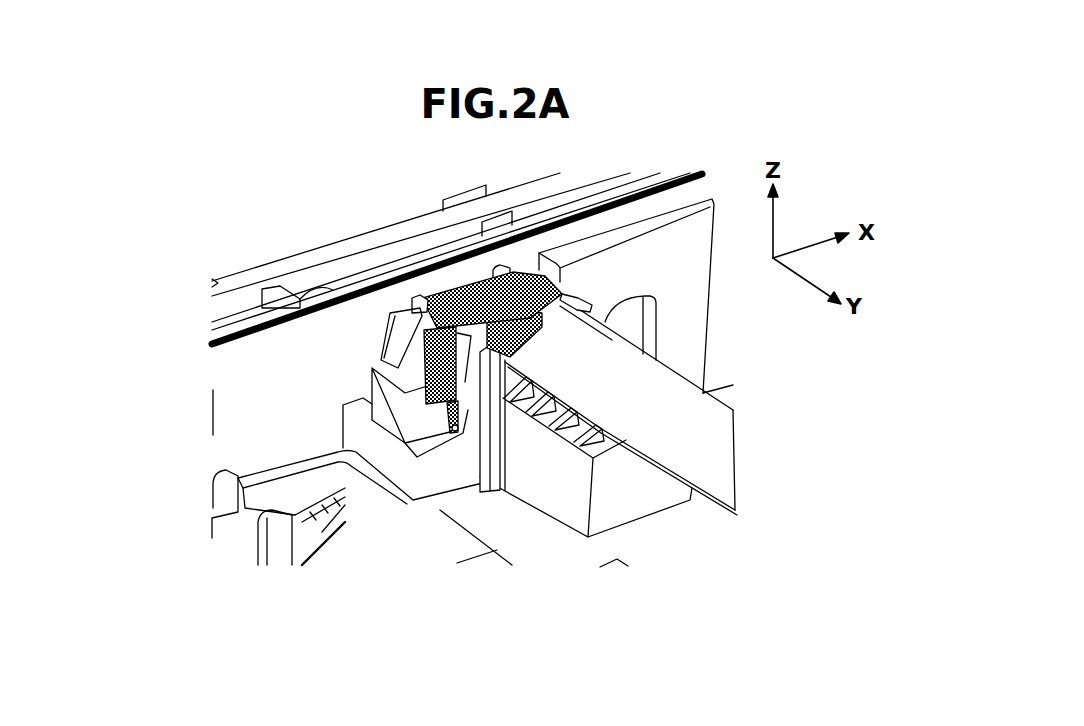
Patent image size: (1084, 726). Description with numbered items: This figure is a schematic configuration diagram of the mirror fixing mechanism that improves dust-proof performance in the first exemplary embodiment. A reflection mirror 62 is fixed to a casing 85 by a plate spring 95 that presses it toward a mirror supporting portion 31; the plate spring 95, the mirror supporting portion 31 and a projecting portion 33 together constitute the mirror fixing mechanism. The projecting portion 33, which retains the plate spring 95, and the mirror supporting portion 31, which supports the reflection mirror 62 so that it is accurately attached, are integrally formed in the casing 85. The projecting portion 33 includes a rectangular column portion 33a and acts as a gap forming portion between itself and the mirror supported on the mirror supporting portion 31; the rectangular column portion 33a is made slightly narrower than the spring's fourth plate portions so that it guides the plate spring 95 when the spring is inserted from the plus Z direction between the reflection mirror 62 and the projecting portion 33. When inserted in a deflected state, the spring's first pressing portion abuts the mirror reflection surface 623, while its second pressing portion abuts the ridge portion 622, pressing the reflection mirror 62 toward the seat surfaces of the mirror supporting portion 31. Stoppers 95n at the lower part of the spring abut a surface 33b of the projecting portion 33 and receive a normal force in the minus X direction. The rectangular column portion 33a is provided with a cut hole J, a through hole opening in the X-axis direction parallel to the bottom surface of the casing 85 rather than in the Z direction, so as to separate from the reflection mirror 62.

The mirror supporting portion 31 is at (625, 503).
The projecting portion 33 is at (383, 418).
The rectangular column portion 33a is at (420, 418).
The surface 33b is at (468, 412).
The reflection mirror 62 is at (723, 463).
The ridge portion 622 is at (677, 371).
The mirror reflection surface 623 is at (693, 430).
The casing 85 is at (262, 382).
The plate spring 95 is at (454, 288).
The stopper 95n is at (447, 434).
The cut hole J is at (383, 358).